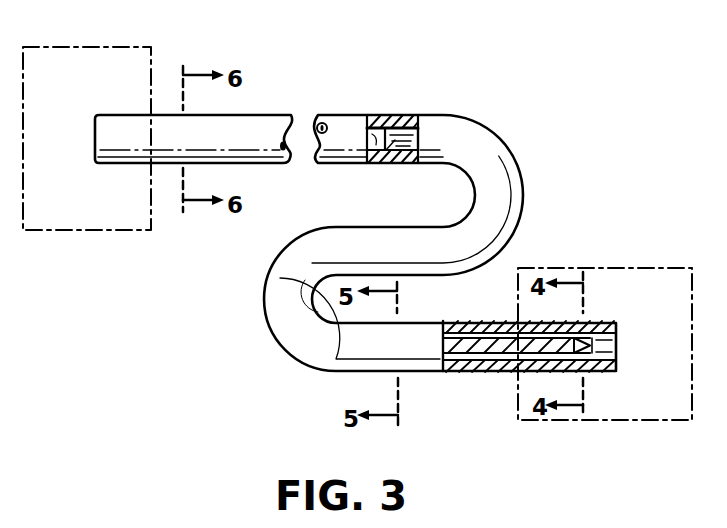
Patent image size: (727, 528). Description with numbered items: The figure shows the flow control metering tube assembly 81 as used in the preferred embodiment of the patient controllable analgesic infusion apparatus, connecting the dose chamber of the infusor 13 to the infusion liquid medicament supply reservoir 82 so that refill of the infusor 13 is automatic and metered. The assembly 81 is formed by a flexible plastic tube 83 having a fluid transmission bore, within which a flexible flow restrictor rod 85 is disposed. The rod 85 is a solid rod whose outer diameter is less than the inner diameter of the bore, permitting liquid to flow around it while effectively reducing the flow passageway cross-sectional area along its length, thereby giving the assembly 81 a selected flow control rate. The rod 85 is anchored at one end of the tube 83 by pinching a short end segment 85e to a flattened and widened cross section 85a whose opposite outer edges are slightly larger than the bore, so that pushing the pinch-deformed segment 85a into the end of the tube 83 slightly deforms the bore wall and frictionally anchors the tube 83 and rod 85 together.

The infusor 13 is at (650, 268).
The flow control metering tube assembly 81 is at (258, 115).
The reservoir/connector (dashed outline) 82 is at (152, 68).
The flexible plastic tube 83 is at (272, 166).
The flexible flow restrictor rod 85 is at (410, 117).
The flattened and widened cross section 85a is at (617, 350).
The reinforced tube section 85e is at (386, 116).